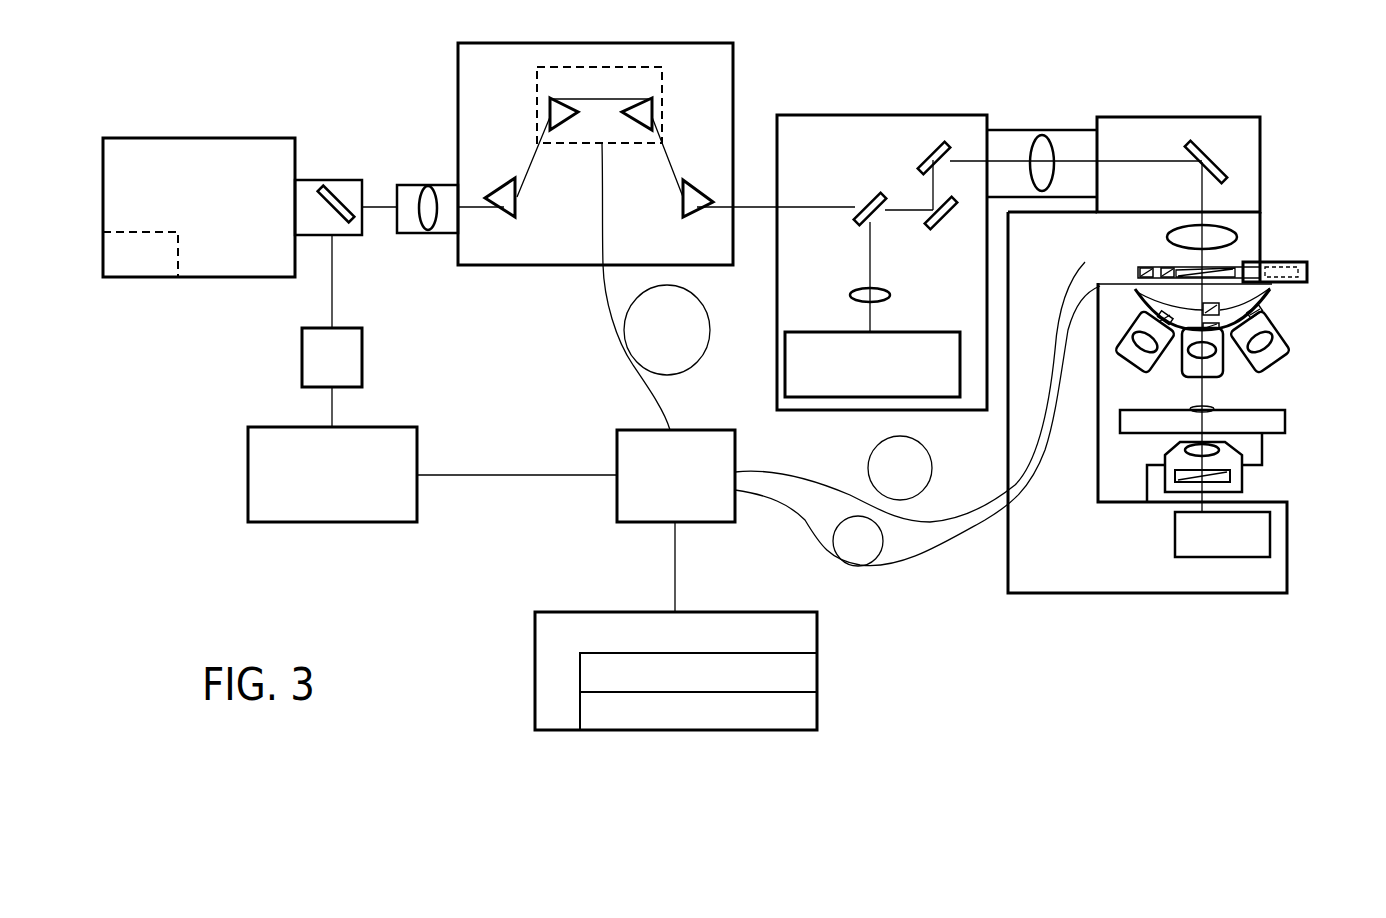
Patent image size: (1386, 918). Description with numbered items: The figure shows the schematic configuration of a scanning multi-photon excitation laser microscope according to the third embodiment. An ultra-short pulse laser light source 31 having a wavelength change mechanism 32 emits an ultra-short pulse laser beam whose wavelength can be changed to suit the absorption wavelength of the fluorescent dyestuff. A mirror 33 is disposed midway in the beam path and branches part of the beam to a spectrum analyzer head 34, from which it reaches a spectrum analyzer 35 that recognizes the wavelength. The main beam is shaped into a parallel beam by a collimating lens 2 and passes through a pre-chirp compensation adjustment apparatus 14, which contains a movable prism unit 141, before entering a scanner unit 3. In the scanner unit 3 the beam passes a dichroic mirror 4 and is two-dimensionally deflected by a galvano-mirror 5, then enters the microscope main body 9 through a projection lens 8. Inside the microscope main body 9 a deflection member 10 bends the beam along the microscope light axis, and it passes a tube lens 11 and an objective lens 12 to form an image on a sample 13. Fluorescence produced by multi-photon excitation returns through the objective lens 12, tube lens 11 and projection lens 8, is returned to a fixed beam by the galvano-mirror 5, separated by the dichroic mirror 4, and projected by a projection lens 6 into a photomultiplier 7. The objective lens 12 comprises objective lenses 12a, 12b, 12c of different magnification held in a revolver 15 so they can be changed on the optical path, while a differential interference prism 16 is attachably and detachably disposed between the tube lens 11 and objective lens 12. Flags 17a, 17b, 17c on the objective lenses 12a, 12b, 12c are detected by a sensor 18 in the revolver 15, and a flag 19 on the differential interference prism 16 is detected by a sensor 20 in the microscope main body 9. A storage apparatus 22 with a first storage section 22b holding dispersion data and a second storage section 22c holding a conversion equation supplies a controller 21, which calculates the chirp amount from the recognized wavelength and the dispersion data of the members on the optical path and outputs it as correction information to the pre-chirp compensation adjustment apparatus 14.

The collimating lens 2 is at (428, 185).
The scanner unit 3 is at (836, 115).
The dichroic mirror 4 is at (866, 198).
The galvano-mirror 5 is at (925, 155).
The projection lens 6 is at (893, 292).
The photomultiplier 7 is at (945, 332).
The projection lens 8 is at (1042, 130).
The microscope main body 9 is at (1075, 596).
The deflection member 10 is at (1215, 163).
The tube lens 11 is at (1182, 225).
The objective lens 12 is at (1355, 380).
The objective lens 12a is at (1240, 362).
The objective lens 12b is at (1223, 380).
The objective lens 12c is at (1158, 363).
The sample 13 is at (1200, 409).
The pre-chirp compensation adjustment apparatus 14 is at (505, 43).
The movable prism unit 141 is at (603, 67).
The revolver 15 is at (1283, 263).
The differential interference prism 16 is at (1256, 260).
The flag 17a is at (1262, 313).
The flag 17b is at (1275, 340).
The flag 17c is at (1093, 270).
The sensor 18 is at (1264, 318).
The flag 19 is at (1164, 267).
The sensor 20 is at (1140, 267).
The controller 21 is at (617, 452).
The storage apparatus 22 is at (535, 630).
The first storage section 22b is at (817, 673).
The second storage section 22c is at (817, 711).
The ultra-short pulse laser light source 31 is at (258, 138).
The wavelength change mechanism 32 is at (158, 278).
The mirror 33 is at (333, 182).
The spectrum analyzer head 34 is at (364, 355).
The spectrum analyzer 35 is at (419, 437).